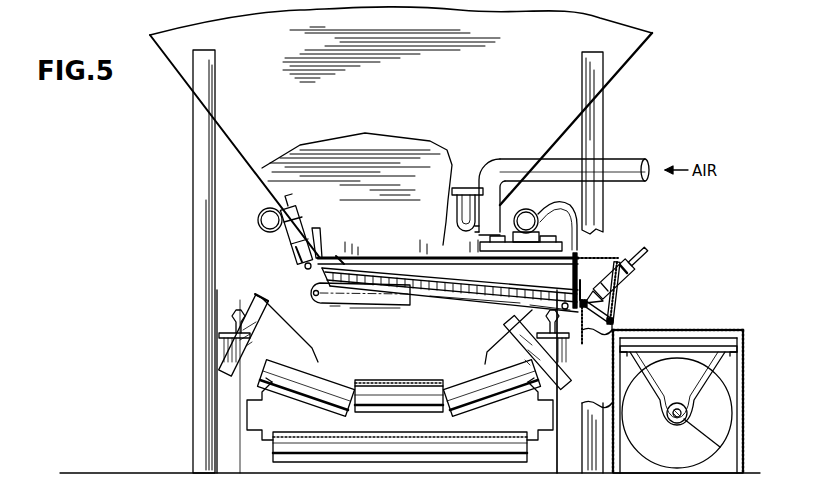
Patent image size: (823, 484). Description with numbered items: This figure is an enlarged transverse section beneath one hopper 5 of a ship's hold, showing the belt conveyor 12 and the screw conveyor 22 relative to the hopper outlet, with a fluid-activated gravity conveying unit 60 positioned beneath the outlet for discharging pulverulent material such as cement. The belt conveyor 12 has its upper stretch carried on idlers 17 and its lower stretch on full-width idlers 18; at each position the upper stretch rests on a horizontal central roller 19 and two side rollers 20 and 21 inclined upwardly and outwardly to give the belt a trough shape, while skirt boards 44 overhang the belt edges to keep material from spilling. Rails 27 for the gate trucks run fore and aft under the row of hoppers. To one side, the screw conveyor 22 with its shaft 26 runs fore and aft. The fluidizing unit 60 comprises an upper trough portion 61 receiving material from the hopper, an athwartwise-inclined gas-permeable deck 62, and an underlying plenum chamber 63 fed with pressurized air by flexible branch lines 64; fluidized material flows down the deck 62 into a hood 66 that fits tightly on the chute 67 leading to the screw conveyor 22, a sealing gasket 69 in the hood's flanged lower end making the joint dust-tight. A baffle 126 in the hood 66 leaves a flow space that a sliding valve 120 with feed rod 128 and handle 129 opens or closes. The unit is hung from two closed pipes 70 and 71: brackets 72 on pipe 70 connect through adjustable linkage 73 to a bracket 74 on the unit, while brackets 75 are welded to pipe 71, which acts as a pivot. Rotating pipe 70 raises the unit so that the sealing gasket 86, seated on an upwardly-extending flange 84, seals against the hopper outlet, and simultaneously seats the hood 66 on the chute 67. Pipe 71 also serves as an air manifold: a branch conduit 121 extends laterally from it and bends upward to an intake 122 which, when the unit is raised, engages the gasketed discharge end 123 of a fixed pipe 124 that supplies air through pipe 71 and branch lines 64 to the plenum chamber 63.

The hopper 5 is at (630, 66).
The belt conveyor 12 is at (399, 403).
The idlers 17 is at (305, 400).
The idlers 18 is at (375, 451).
The central roller 19 is at (410, 405).
The side roller 20 is at (312, 387).
The side roller 21 is at (512, 387).
The screw conveyor 22 is at (720, 330).
The shaft 26 is at (684, 420).
The rails 27 is at (240, 312).
The skirt boards 44 is at (318, 332).
The fluidizing conveying unit 60 is at (400, 256).
The upper trough portion 61 is at (578, 266).
The gas-permeable deck 62 is at (436, 276).
The plenum chamber 63 is at (408, 300).
The flexible branch lines 64 is at (577, 213).
The hood 66 is at (624, 300).
The chute 67 is at (600, 372).
The sealing gasket 69 is at (620, 323).
The closed pipe 70 is at (258, 219).
The closed pipe 71 is at (522, 210).
The bracket 72 is at (292, 207).
The adjustable linkage 73 is at (296, 234).
The bracket 74 is at (310, 269).
The brackets 75 is at (500, 253).
The upwardly-extending flange 84 is at (322, 238).
The sealing gasket 86 is at (352, 256).
The sliding valve 120 is at (582, 296).
The branch conduit 121 is at (488, 218).
The intake 122 is at (456, 204).
The discharge end 123 is at (458, 187).
The fixed pipe 124 is at (630, 166).
The baffle 126 is at (606, 272).
The feed rod 128 is at (635, 278).
The handle 129 is at (641, 253).